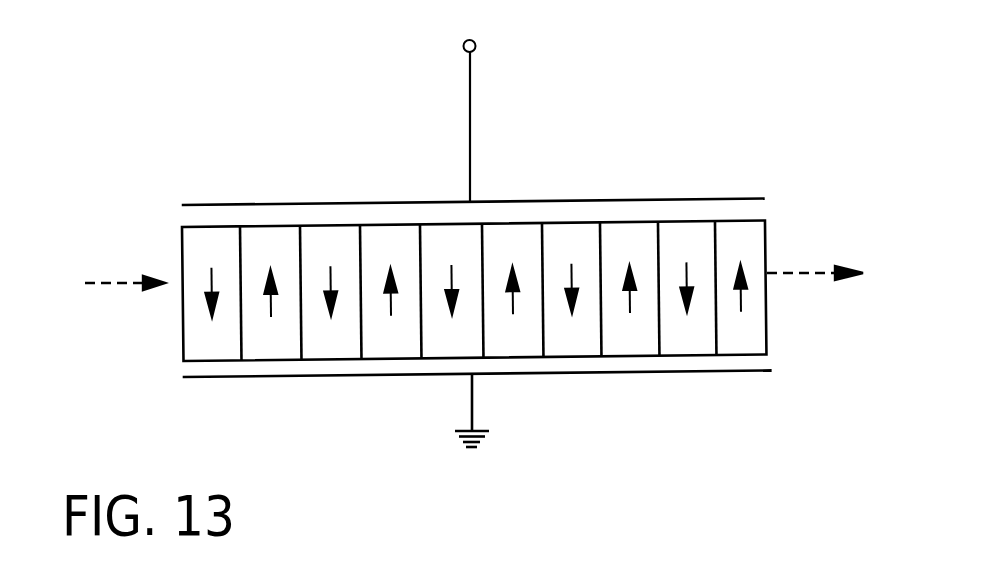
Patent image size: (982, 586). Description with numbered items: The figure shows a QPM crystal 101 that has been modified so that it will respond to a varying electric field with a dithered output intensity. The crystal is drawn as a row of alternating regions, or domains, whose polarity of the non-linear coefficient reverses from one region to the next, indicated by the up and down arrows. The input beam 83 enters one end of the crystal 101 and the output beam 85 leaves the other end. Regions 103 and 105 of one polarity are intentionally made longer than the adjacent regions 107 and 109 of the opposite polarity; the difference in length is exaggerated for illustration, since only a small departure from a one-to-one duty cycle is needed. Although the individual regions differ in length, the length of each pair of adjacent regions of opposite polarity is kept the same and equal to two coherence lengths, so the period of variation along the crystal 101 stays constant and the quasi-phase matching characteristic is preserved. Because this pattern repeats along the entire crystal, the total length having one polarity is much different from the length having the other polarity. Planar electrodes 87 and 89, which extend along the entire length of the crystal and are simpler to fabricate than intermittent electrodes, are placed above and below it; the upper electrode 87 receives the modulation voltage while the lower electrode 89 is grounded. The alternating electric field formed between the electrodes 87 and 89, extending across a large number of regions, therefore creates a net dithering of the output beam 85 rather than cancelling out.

The input beam 83 is at (102, 278).
The output beam 85 is at (813, 268).
The electrode 87 is at (730, 198).
The electrode 89 is at (670, 375).
The QPM crystal 101 is at (182, 315).
The region 103 is at (218, 238).
The region 105 is at (325, 237).
The region 107 is at (277, 237).
The region 109 is at (385, 233).